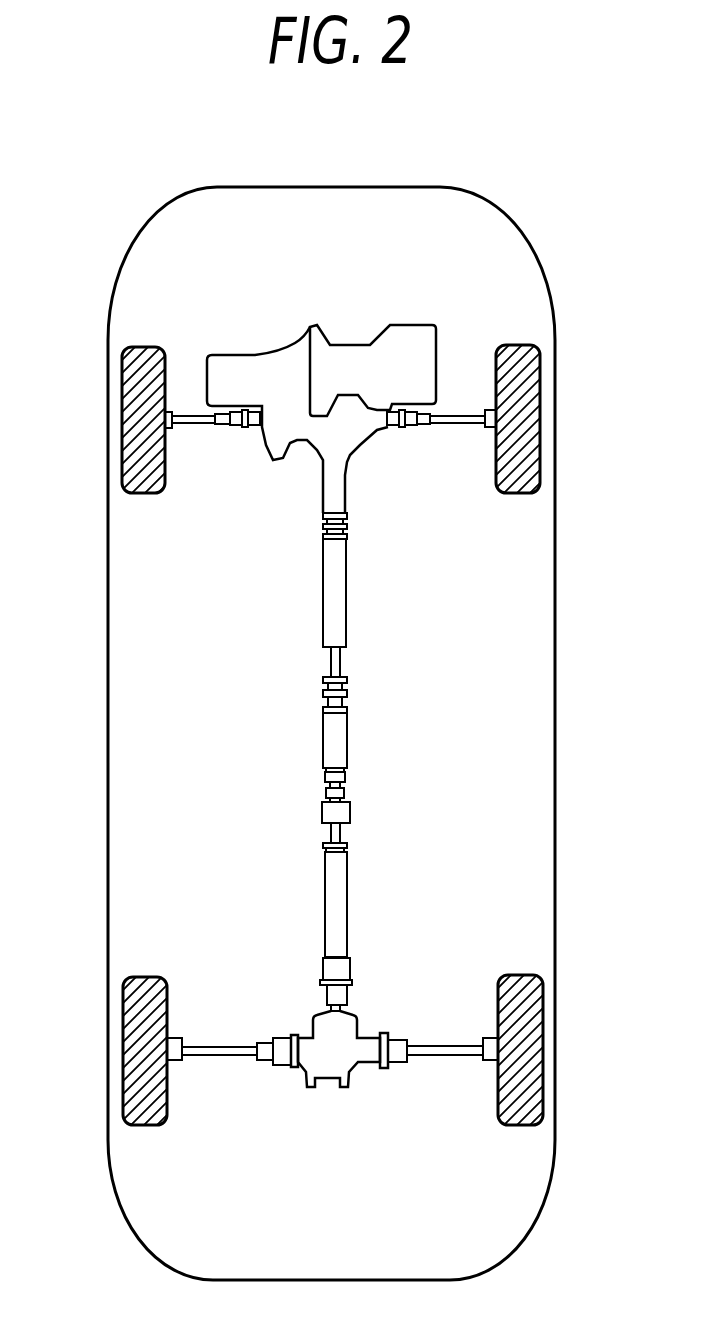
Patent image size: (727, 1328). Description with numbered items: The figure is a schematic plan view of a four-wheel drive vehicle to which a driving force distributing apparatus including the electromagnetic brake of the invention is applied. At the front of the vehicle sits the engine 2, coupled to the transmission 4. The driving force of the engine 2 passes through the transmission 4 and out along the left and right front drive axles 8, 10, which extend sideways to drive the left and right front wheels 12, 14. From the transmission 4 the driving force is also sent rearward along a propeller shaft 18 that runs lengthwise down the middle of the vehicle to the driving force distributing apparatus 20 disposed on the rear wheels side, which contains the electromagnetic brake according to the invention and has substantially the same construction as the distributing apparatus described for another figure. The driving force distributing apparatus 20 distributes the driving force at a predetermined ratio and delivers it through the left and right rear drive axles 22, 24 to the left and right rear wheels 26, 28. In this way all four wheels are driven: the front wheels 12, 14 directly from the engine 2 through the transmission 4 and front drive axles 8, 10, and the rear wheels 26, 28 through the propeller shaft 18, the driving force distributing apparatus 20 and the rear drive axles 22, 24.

The engine 2 is at (350, 345).
The transmission 4 is at (250, 355).
The front drive axle 8 is at (200, 427).
The front drive axle 10 is at (455, 425).
The front wheel 12 is at (125, 418).
The front wheel 14 is at (540, 410).
The propeller shaft 18 is at (347, 742).
The driving force distributing apparatus 20 is at (363, 1020).
The rear drive axle 22 is at (225, 1057).
The rear drive axle 24 is at (455, 1057).
The rear wheel 26 is at (125, 1050).
The rear wheel 28 is at (537, 1042).